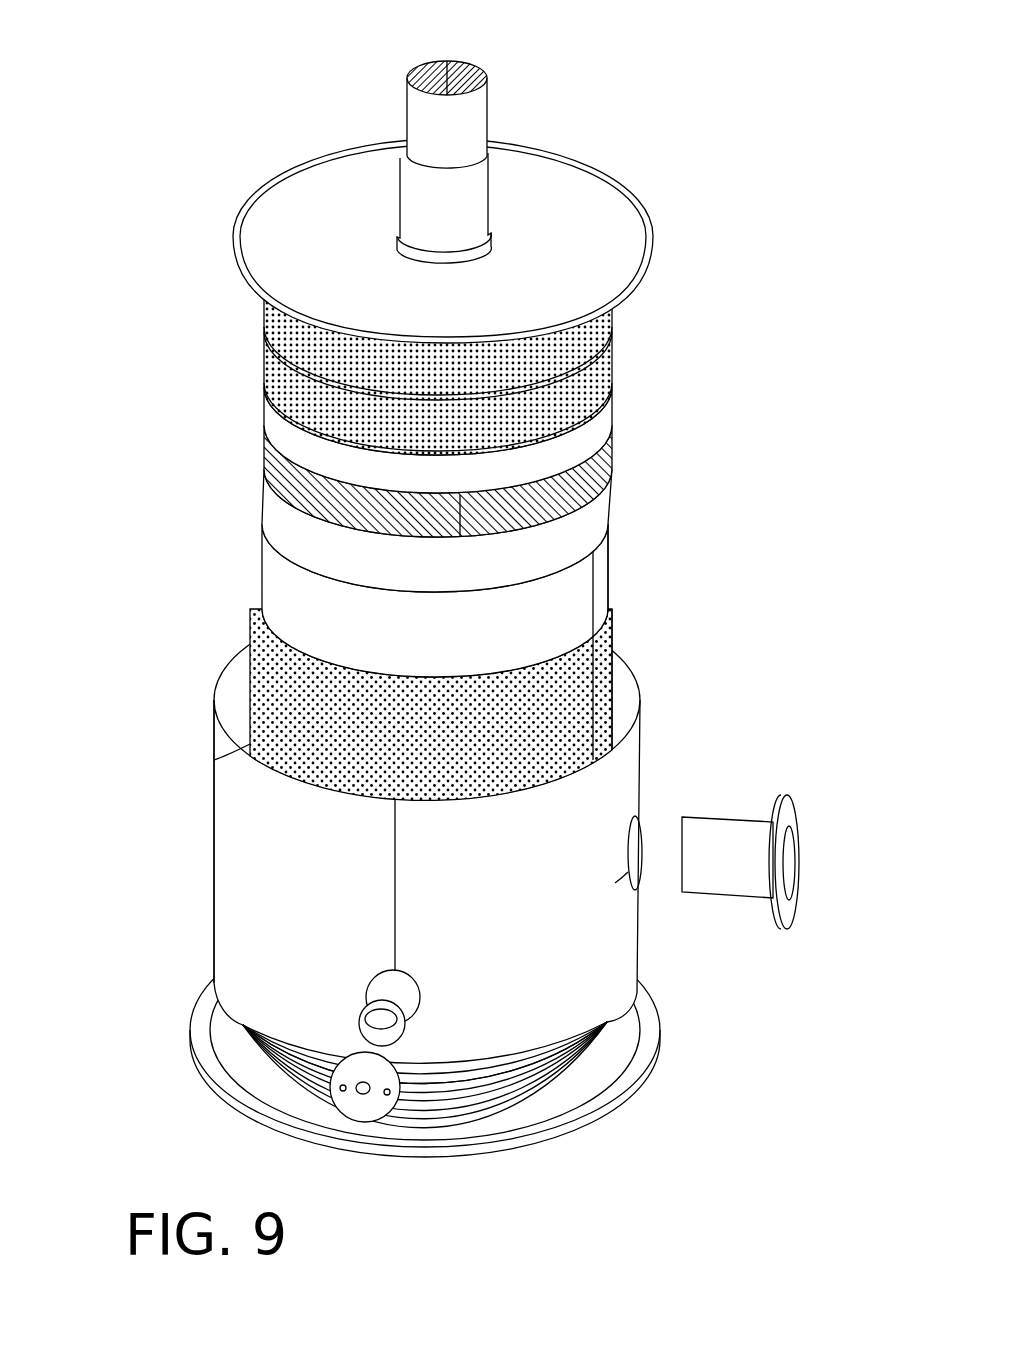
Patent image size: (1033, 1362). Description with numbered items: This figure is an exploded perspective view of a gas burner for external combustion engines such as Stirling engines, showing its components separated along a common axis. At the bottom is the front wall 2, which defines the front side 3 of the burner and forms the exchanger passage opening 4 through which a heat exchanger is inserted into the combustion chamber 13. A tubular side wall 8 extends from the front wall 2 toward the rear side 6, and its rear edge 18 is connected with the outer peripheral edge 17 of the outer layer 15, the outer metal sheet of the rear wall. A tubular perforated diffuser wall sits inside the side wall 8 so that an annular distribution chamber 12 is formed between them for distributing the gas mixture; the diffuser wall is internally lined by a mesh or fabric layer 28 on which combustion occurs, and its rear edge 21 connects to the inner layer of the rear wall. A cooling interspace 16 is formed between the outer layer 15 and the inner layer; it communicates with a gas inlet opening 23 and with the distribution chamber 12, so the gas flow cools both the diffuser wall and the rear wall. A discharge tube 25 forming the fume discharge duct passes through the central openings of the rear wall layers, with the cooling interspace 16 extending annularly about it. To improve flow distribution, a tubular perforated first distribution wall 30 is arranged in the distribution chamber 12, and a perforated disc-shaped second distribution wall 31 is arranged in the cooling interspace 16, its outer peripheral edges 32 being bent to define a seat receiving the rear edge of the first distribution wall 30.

The front wall 2 is at (583, 1072).
The front side 3 is at (450, 912).
The exchanger passage opening 4 is at (478, 1067).
The rear side 6 is at (450, 612).
The tubular side wall 8 is at (418, 842).
The annular distribution chamber 12 is at (618, 595).
The combustion chamber 13 is at (418, 518).
The outer layer 15 is at (590, 200).
The cooling interspace 16 is at (447, 367).
The outer peripheral edge 17 is at (499, 225).
The rear edge 18 is at (215, 763).
The rear edge 21 is at (580, 577).
The gas inlet opening 23 is at (643, 837).
The discharge tube 25 is at (478, 203).
The mesh or fabric layer 28 is at (613, 497).
The first distribution wall 30 is at (603, 636).
The second distribution wall 31 is at (449, 367).
The outer peripheral edges 32 is at (270, 371).